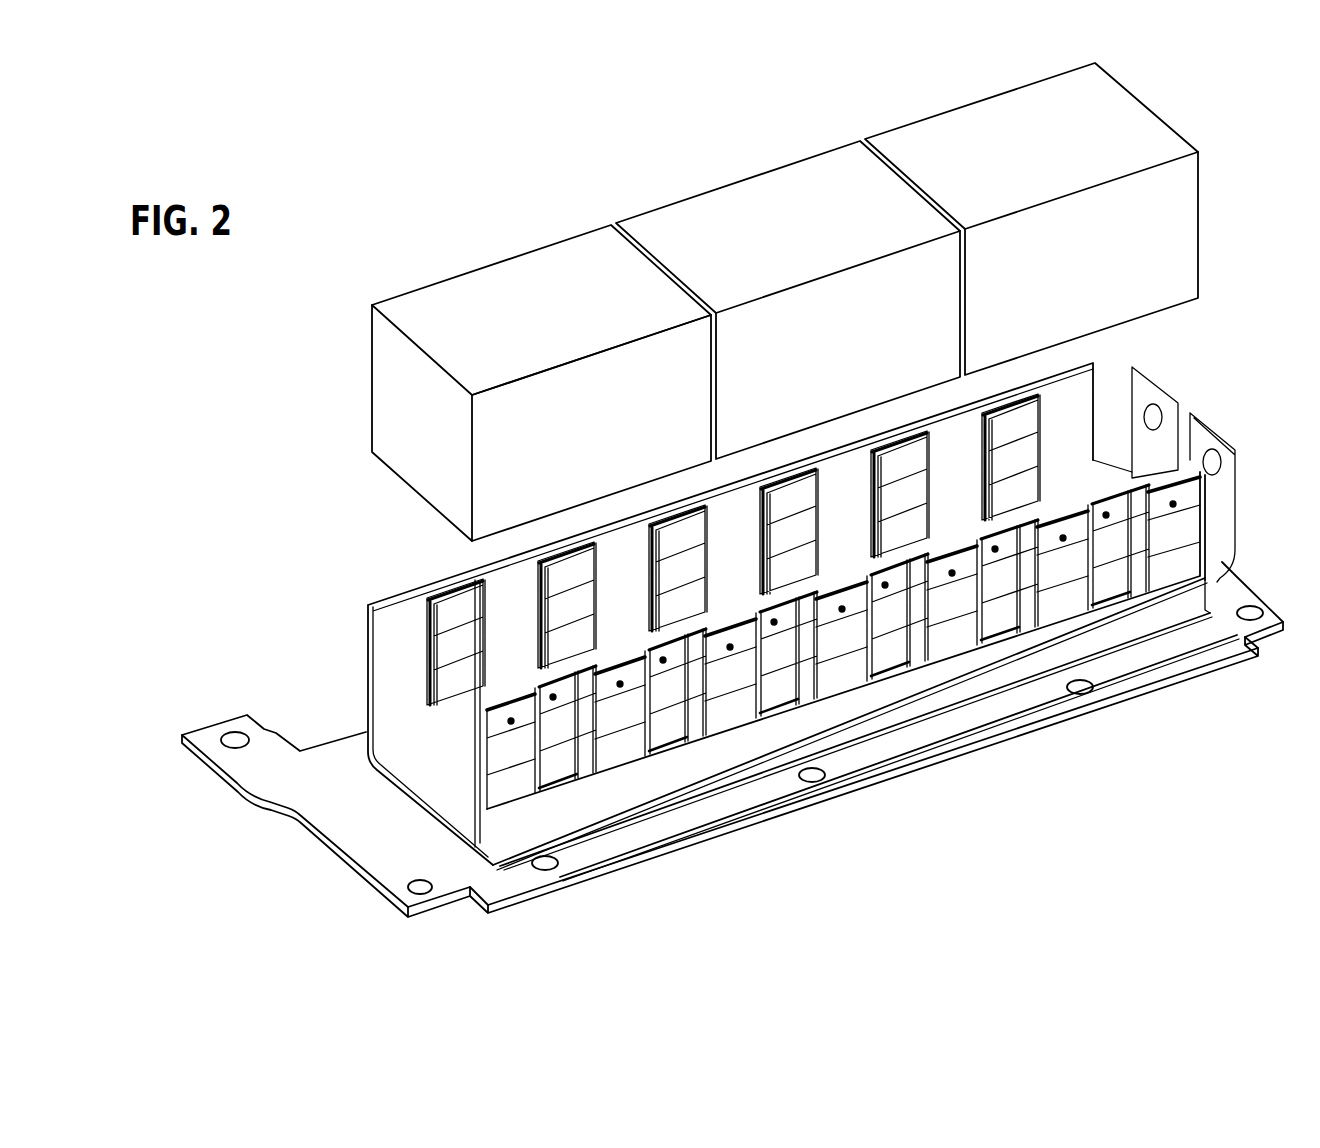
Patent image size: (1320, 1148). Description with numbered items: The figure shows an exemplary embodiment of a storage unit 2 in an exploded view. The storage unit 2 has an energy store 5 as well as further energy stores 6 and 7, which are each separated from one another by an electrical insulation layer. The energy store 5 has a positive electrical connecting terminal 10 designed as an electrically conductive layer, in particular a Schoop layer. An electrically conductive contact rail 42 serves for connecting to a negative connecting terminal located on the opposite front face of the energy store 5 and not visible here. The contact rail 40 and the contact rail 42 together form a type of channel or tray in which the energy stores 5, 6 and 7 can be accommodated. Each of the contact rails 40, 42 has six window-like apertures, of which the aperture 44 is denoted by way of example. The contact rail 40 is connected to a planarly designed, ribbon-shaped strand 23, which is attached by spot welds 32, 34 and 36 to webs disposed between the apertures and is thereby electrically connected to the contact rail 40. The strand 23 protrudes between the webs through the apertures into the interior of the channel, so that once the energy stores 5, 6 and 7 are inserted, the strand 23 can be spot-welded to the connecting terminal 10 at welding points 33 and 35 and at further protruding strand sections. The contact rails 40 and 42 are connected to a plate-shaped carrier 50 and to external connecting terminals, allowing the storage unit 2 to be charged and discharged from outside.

The storage unit 2 is at (403, 211).
The energy store 5 is at (541, 363).
The further energy store 6 is at (695, 210).
The further energy store 7 is at (906, 143).
The positive electrical connecting terminal 10 is at (570, 392).
The strand 23 is at (443, 618).
The spot weld 32 is at (511, 724).
The spot weld 33 is at (554, 700).
The spot weld 34 is at (620, 687).
The spot weld 35 is at (664, 663).
The spot weld 36 is at (730, 650).
The contact rail 40 is at (846, 709).
The contact rail 42 is at (398, 670).
The aperture 44 is at (447, 598).
The plate-shaped carrier 50 is at (1135, 637).